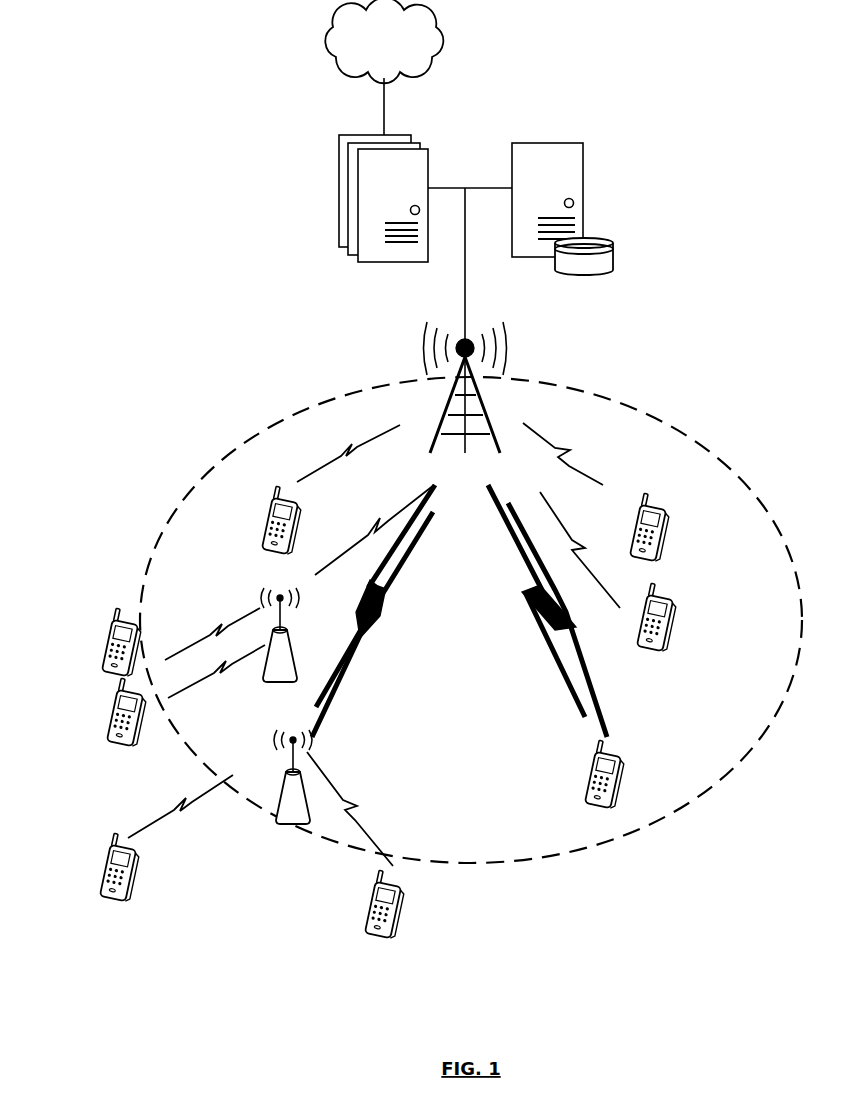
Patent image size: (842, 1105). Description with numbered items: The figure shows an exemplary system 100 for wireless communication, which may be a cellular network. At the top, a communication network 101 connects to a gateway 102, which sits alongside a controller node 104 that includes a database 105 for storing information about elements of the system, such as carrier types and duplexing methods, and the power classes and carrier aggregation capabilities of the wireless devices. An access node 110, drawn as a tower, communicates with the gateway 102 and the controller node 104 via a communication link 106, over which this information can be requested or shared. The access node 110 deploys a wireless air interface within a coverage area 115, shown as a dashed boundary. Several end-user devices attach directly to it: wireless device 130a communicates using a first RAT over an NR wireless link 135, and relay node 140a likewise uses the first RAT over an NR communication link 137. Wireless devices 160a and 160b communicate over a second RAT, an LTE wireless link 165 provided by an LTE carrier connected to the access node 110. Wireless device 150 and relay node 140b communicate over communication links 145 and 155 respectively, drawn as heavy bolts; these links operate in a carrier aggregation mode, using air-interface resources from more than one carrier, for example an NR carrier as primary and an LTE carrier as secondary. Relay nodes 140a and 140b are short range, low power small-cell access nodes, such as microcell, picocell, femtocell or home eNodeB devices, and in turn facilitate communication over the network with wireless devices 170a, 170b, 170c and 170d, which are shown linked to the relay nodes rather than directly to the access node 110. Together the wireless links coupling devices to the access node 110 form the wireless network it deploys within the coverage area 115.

The system 100 is at (498, 82).
The communication network 101 is at (384, 41).
The gateway 102 is at (344, 136).
The controller node 104 is at (583, 143).
The database 105 is at (611, 242).
The communication link 106 is at (465, 275).
The access node 110 is at (448, 412).
The coverage area 115 is at (536, 382).
The end-user wireless device 130a is at (264, 535).
The wireless link 135 is at (326, 462).
The NR communication link 137 is at (381, 517).
The relay node 140a is at (283, 682).
The relay node 140b is at (283, 823).
The communication link 145 is at (400, 590).
The end-user wireless device 150 is at (618, 795).
The communication link 155 is at (540, 635).
The end-user wireless device 160a is at (668, 550).
The end-user wireless device 160b is at (679, 618).
The wireless link 165 is at (572, 450).
The wireless device 170a is at (103, 648).
The wireless device 170b is at (110, 750).
The wireless device 170c is at (120, 905).
The wireless device 170d is at (403, 895).